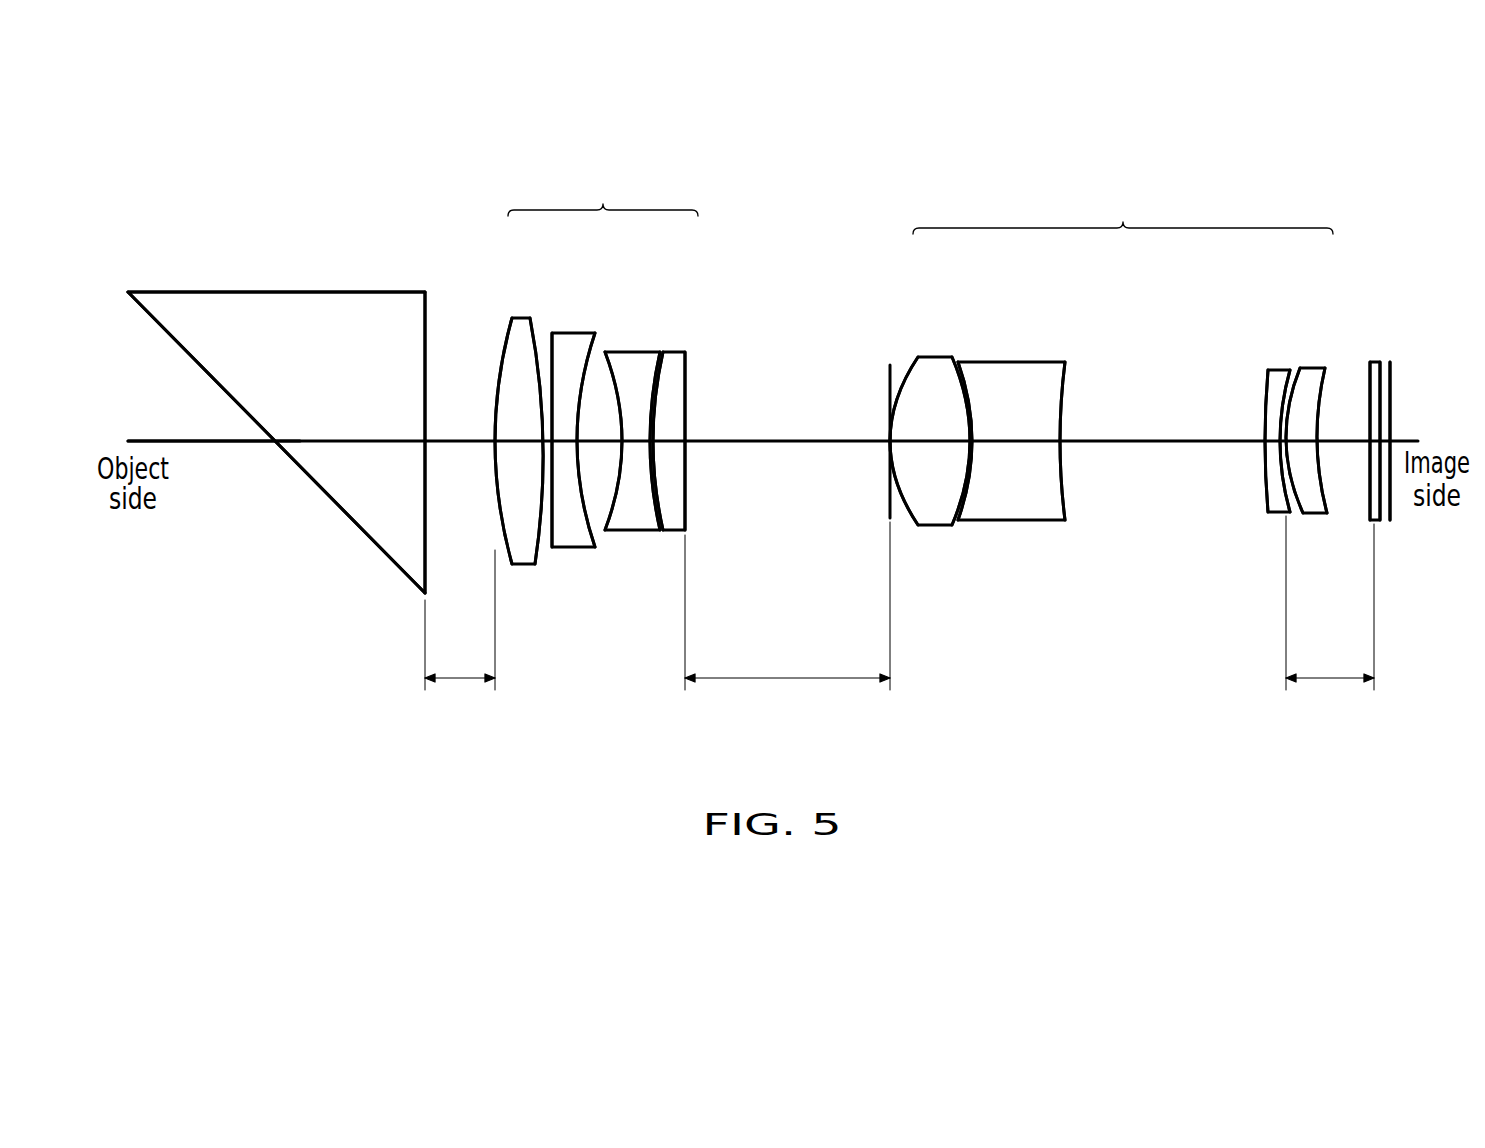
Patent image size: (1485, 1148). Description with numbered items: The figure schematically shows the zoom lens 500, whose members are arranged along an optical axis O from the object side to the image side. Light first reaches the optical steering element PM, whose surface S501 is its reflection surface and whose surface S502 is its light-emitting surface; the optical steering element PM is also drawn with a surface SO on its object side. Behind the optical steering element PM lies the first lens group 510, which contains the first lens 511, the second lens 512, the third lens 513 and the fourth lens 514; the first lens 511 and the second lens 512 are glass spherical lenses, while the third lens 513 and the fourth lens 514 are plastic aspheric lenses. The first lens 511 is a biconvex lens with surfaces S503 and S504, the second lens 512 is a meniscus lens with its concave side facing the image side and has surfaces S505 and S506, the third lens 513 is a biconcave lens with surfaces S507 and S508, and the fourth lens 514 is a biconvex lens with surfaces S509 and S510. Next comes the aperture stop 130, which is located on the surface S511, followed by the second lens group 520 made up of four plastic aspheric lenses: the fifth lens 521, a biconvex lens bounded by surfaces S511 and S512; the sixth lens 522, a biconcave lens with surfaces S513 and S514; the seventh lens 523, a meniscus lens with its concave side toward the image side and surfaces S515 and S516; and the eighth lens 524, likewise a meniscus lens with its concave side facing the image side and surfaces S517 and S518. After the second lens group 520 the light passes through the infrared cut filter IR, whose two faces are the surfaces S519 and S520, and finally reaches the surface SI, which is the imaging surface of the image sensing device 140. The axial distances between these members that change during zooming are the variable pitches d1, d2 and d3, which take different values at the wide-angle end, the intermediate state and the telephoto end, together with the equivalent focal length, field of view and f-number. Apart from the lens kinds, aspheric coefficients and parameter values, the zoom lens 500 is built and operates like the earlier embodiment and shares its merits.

The zoom lens 500 is at (1372, 791).
The optical steering element PM is at (168, 313).
The surface S501 is at (187, 336).
The object-side surface of prism (light incident surface) SO is at (344, 288).
The surface S502 is at (439, 324).
The optical axis O is at (214, 443).
The first lens group 510 is at (596, 364).
The first lens 511 is at (527, 323).
The second lens 512 is at (570, 342).
The third lens 513 is at (635, 360).
The fourth lens 514 is at (677, 360).
The surface S503 is at (498, 543).
The surface S504 is at (540, 567).
The surface S505 is at (543, 534).
The surface S506 is at (596, 531).
The surface S507 is at (603, 506).
The surface S508 is at (666, 529).
The surface S509 is at (648, 500).
The surface S510 is at (696, 526).
The aperture stop 130 is at (888, 363).
The second lens group 520 is at (1111, 354).
The fifth lens 521 is at (935, 360).
The sixth lens 522 is at (975, 365).
The seventh lens 523 is at (1277, 365).
The eighth lens 524 is at (1307, 365).
The surface S511 is at (904, 522).
The surface S512 is at (960, 527).
The surface S513 is at (953, 496).
The surface S514 is at (1066, 519).
The surface S515 is at (1259, 502).
The surface S516 is at (1284, 500).
The surface S517 is at (1276, 492).
The surface S518 is at (1324, 494).
The infrared cut filter IR is at (1364, 381).
The surface S519 is at (1359, 524).
The surface S520 is at (1386, 504).
The surface SI is at (1388, 361).
The image sensing device 140 is at (1401, 376).
The variable pitch d1 is at (460, 620).
The variable pitch d2 is at (787, 606).
The variable pitch d3 is at (1330, 603).